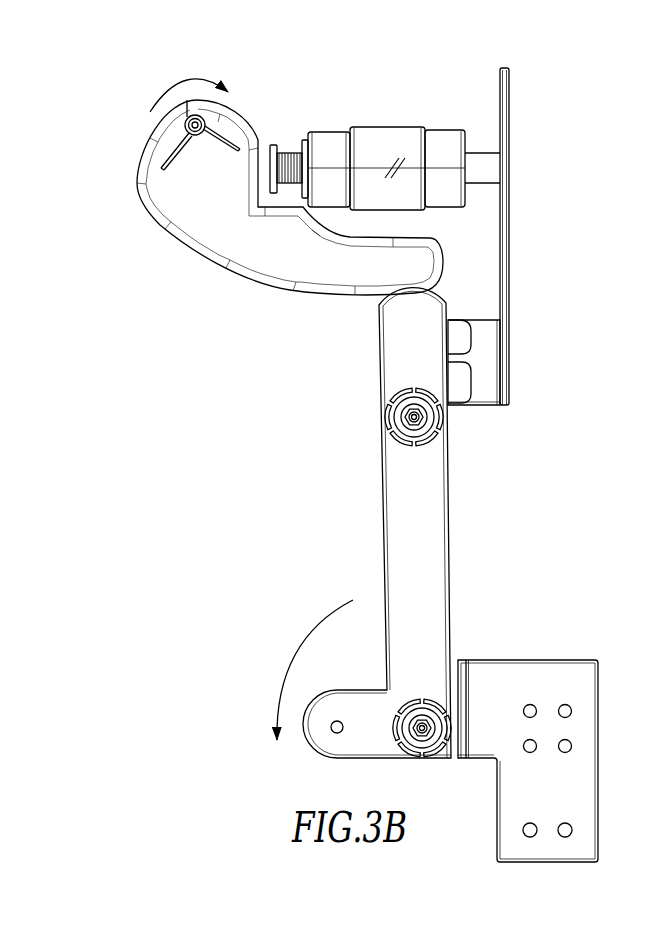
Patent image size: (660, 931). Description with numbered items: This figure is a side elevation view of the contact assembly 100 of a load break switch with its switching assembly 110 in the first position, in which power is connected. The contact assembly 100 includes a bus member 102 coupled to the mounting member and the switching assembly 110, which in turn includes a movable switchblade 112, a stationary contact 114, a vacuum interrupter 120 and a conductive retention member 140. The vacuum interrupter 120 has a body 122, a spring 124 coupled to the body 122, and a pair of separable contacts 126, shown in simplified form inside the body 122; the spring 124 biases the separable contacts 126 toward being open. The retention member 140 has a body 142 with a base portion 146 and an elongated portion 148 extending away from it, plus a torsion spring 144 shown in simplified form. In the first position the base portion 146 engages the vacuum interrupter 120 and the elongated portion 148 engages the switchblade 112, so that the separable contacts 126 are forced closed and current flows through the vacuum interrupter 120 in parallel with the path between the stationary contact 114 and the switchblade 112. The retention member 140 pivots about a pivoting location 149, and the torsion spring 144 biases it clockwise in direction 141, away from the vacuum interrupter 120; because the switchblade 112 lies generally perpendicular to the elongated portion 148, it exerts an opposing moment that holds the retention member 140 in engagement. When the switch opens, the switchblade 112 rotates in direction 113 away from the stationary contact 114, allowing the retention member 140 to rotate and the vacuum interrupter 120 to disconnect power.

The contact assembly 100 is at (540, 103).
The bus member 102 is at (512, 240).
The switching assembly 110 is at (330, 453).
The switchblade 112 is at (427, 560).
The direction 113 is at (322, 608).
The stationary contact 114 is at (478, 407).
The vacuum interrupter 120 is at (378, 122).
The body 122 is at (328, 140).
The spring 124 is at (292, 150).
The pair of separable contacts 126 is at (440, 173).
The retention member 140 is at (137, 182).
The direction 141 is at (165, 88).
The body 142 is at (222, 260).
The torsion spring 144 is at (180, 150).
The base portion 146 is at (177, 138).
The elongated portion 148 is at (285, 263).
The pivoting location 149 is at (213, 122).